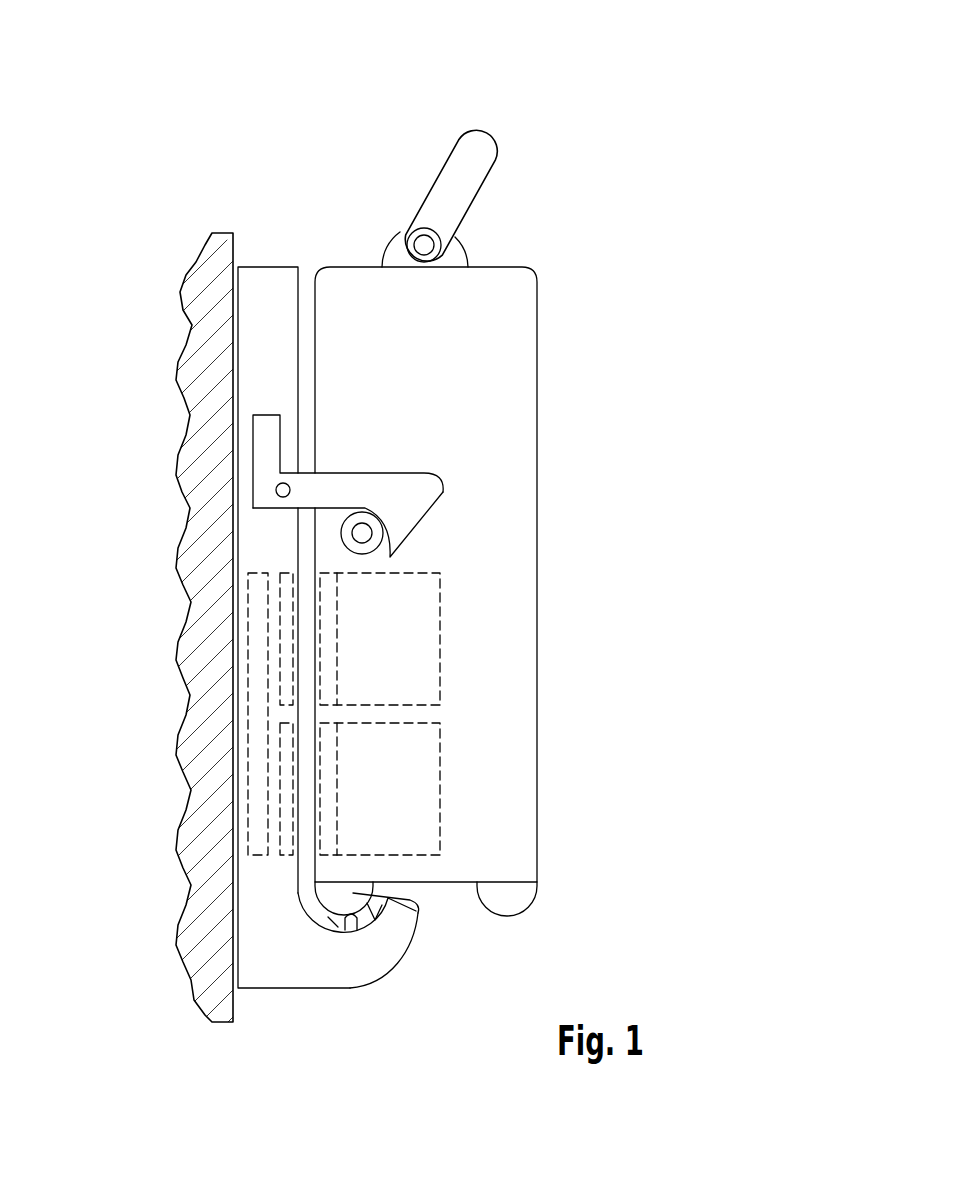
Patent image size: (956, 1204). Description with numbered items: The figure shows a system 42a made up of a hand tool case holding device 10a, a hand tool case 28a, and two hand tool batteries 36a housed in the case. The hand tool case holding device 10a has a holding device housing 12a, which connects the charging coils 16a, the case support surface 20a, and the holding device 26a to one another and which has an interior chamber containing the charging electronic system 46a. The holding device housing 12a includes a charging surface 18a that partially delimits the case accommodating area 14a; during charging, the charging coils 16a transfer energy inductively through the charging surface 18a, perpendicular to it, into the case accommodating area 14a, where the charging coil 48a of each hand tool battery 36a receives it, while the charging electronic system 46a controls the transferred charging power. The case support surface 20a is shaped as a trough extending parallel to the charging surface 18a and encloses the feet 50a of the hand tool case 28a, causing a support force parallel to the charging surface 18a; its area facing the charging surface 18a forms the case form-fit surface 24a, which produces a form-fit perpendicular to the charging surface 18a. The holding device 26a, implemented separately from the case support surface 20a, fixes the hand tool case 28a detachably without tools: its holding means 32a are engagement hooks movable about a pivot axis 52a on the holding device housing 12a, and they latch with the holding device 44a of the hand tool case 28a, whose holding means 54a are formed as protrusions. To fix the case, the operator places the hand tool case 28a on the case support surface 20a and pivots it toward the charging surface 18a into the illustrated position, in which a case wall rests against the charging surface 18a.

The hand tool case holding device 10a is at (268, 250).
The holding device housing 12a is at (260, 318).
The case accommodating area 14a is at (432, 155).
The charging coils 16a is at (283, 622).
The charging surface 18a is at (308, 810).
The case support surface 20a is at (352, 918).
The case form-fit surface 24a is at (411, 958).
The holding device 26a is at (447, 513).
The hand tool case 28a is at (517, 292).
The holding means 32a is at (432, 487).
The hand tool batteries 36a is at (422, 625).
The system 42a is at (558, 107).
The holding device of hand tool case 44a is at (348, 524).
The charging electronic system 46a is at (258, 710).
The charging coil of hand tool battery 48a is at (328, 675).
The feet 50a is at (417, 917).
The pivot axis 52a is at (276, 491).
The holding means of hand tool case 54a is at (375, 533).